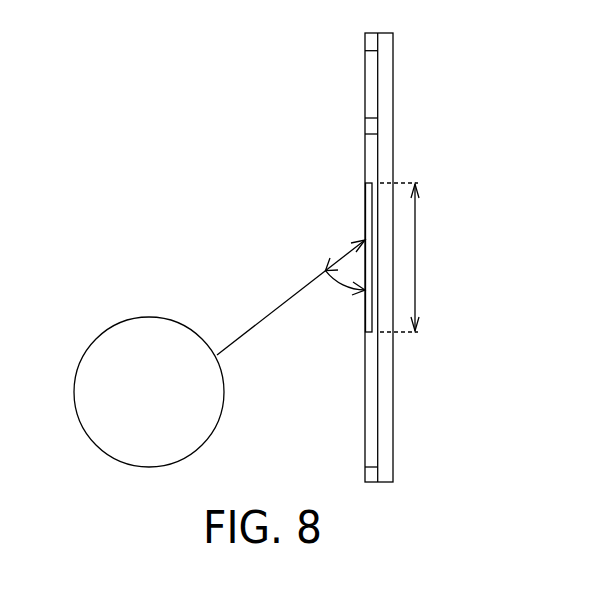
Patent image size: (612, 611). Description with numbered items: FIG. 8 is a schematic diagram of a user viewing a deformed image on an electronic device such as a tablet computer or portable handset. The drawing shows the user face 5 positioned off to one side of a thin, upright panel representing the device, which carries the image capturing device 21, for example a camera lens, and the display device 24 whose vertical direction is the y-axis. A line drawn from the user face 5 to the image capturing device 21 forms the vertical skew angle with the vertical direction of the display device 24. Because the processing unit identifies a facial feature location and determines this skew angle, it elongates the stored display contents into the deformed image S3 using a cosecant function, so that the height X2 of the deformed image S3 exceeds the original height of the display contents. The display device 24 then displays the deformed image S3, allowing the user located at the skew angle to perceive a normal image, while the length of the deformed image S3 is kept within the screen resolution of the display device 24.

The user face 5 is at (149, 318).
The image capturing device 21 is at (372, 81).
The display device 24 is at (372, 394).
The deformed image S3 is at (366, 209).
The height of the deformed image X2 is at (416, 257).